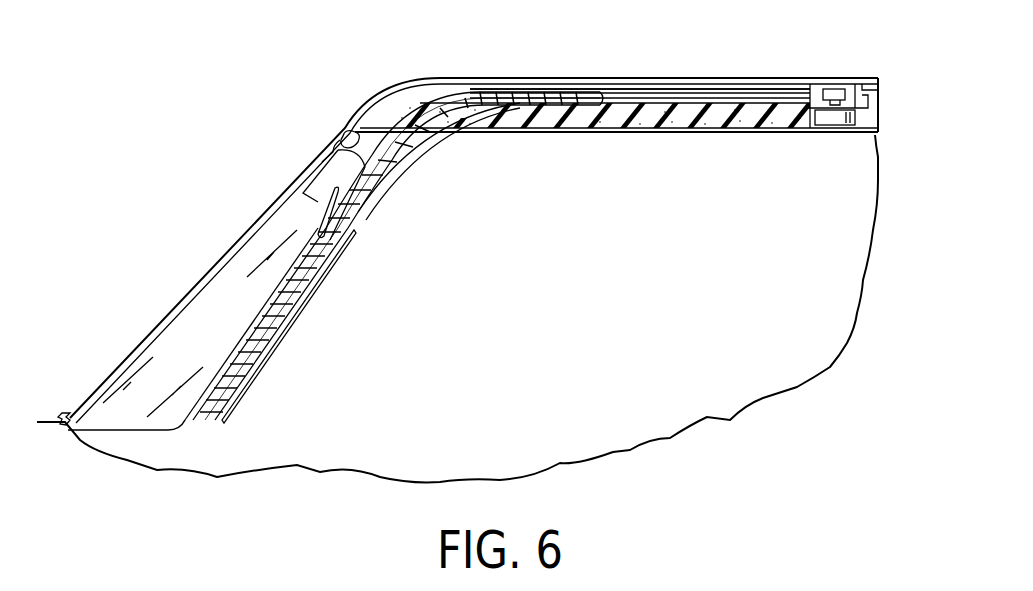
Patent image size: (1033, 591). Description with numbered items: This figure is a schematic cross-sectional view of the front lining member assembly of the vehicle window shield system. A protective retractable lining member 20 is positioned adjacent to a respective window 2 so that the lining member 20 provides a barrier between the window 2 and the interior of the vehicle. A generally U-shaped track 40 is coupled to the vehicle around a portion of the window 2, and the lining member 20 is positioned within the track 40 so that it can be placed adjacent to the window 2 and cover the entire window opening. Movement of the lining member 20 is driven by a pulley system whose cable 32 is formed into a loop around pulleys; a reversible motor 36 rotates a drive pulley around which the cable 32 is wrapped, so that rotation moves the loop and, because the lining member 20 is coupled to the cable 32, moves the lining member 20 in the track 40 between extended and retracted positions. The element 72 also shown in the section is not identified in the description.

The window 2 is at (232, 283).
The protective retractable lining member 20 is at (466, 94).
The cable 32 is at (835, 88).
The reversible motor 36 is at (870, 100).
The U-shaped track 40 is at (252, 348).
The guide strip 72 is at (437, 140).